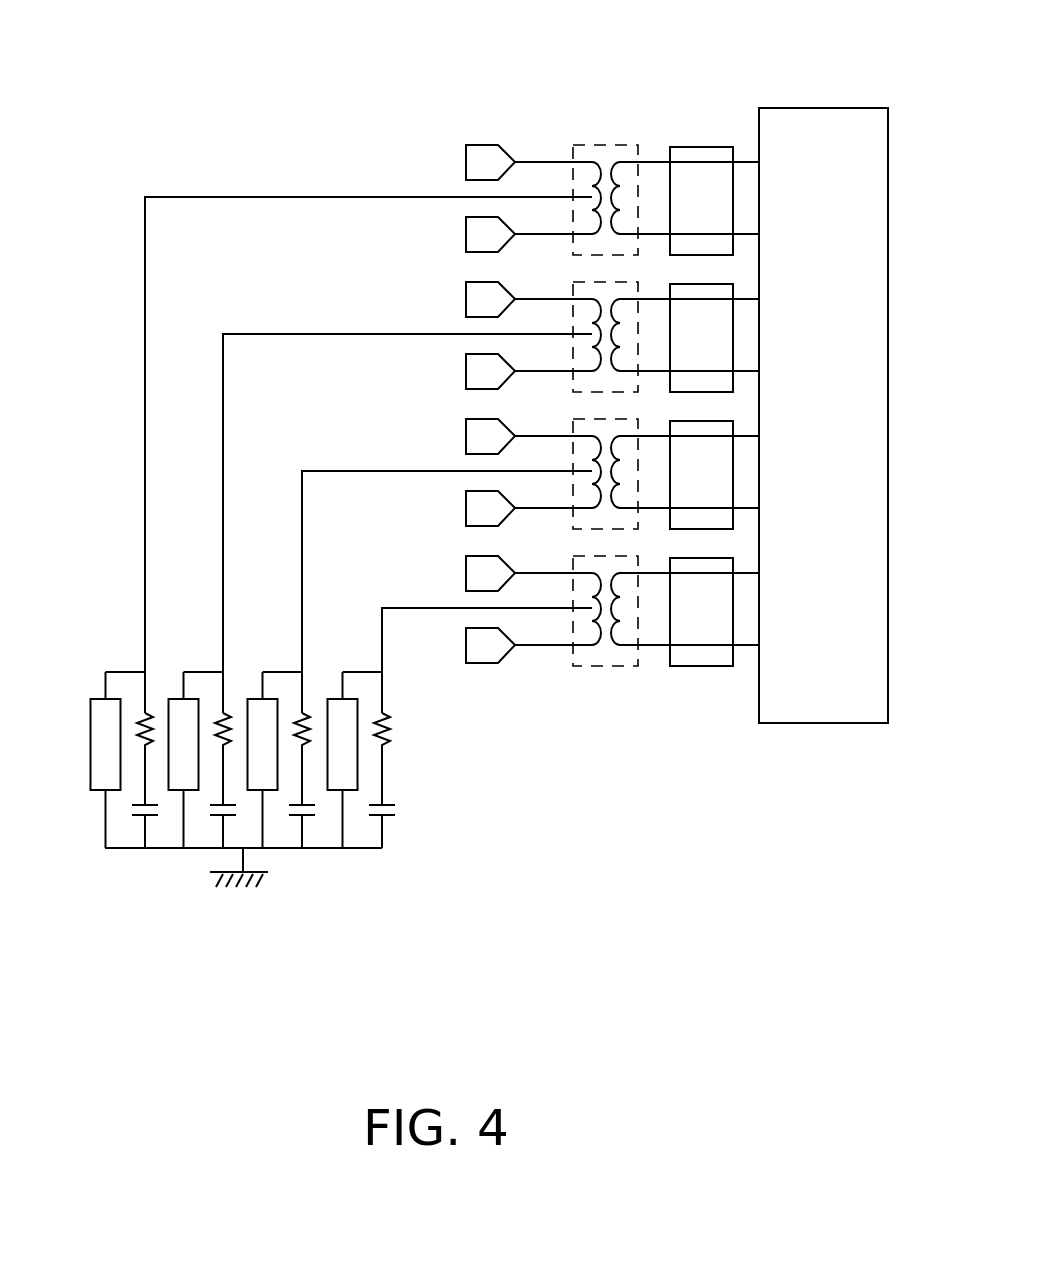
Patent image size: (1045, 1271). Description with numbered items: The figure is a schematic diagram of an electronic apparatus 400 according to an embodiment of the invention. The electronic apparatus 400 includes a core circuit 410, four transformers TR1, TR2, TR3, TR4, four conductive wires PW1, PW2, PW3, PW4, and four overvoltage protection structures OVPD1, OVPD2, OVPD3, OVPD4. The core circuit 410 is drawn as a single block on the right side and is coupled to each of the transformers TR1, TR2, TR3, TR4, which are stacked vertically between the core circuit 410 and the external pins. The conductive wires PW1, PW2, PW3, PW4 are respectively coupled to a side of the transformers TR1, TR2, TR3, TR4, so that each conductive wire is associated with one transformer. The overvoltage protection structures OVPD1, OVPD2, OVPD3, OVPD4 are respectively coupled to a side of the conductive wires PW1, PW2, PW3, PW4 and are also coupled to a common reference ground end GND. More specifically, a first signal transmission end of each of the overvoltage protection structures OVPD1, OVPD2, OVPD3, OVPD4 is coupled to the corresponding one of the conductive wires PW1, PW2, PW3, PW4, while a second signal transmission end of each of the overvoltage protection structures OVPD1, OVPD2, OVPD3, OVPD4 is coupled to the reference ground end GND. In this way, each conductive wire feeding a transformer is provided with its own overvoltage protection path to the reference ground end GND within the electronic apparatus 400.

The electronic apparatus 400 is at (473, 502).
The core circuit 410 is at (812, 108).
The transformer TR1 is at (581, 183).
The transformer TR2 is at (581, 320).
The transformer TR3 is at (581, 457).
The transformer TR4 is at (581, 594).
The conductive wire PW1 is at (368, 439).
The conductive wire PW2 is at (407, 508).
The conductive wire PW3 is at (447, 576).
The conductive wire PW4 is at (487, 645).
The overvoltage protection structure OVPD1 is at (100, 790).
The overvoltage protection structure OVPD2 is at (178, 790).
The overvoltage protection structure OVPD3 is at (267, 790).
The overvoltage protection structure OVPD4 is at (350, 790).
The reference ground end GND is at (239, 887).